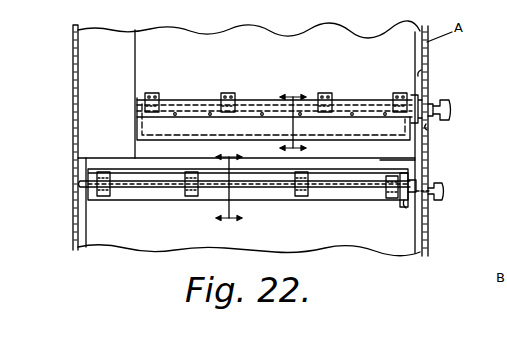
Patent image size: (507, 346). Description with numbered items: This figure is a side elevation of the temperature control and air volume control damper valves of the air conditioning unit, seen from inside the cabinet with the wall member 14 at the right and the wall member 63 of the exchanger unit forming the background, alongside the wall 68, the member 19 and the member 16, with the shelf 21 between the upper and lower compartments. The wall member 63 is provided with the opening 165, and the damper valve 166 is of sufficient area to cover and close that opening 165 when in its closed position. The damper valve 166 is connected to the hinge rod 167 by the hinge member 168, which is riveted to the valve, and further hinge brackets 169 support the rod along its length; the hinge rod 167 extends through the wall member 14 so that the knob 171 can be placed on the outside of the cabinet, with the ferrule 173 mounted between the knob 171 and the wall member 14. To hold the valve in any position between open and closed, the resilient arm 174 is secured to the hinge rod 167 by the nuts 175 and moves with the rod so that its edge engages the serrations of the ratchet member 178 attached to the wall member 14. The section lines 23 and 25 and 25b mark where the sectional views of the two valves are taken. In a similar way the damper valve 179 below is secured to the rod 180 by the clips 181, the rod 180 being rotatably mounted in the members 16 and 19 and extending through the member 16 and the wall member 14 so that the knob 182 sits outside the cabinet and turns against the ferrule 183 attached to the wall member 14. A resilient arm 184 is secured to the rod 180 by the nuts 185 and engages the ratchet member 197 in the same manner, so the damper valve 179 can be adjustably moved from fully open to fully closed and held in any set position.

The section line 25— 25 is at (72, 78).
The partition wall 68 is at (135, 61).
The member 19 is at (87, 233).
The member 16 is at (407, 246).
The wall member 14 is at (428, 82).
The wall member 63 is at (402, 53).
The ratchet member 178 is at (423, 72).
The opening 165 is at (333, 139).
The damper valve 166 is at (198, 120).
The clamp bracket 169 is at (152, 92).
The hinge member 168 is at (237, 100).
The hinge rod 167 is at (324, 92).
The resilient arm 174 is at (416, 100).
The ferrule 173 is at (433, 104).
The knob 171 is at (449, 112).
The nuts 175 is at (427, 128).
The section line 23— 23 is at (293, 121).
The section line 25—25 25b is at (229, 187).
The damper valve 179 is at (330, 201).
The rod 180 is at (363, 198).
The clips 181 is at (188, 196).
The ratchet member 197 is at (405, 180).
The shelf 21 is at (395, 165).
The resilient arm 184 is at (416, 184).
The knob 182 is at (443, 189).
The ferrule 183 is at (425, 203).
The nuts 185 is at (407, 203).